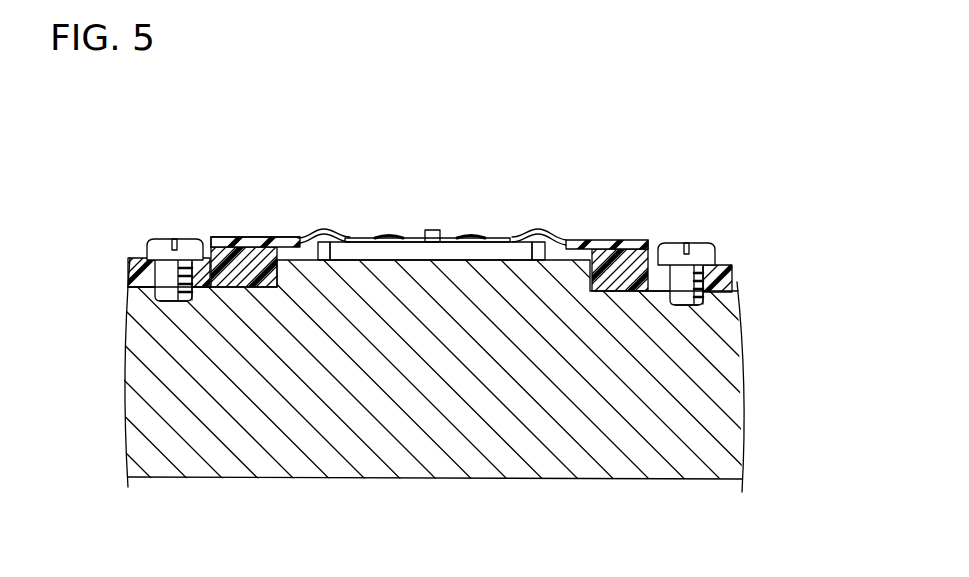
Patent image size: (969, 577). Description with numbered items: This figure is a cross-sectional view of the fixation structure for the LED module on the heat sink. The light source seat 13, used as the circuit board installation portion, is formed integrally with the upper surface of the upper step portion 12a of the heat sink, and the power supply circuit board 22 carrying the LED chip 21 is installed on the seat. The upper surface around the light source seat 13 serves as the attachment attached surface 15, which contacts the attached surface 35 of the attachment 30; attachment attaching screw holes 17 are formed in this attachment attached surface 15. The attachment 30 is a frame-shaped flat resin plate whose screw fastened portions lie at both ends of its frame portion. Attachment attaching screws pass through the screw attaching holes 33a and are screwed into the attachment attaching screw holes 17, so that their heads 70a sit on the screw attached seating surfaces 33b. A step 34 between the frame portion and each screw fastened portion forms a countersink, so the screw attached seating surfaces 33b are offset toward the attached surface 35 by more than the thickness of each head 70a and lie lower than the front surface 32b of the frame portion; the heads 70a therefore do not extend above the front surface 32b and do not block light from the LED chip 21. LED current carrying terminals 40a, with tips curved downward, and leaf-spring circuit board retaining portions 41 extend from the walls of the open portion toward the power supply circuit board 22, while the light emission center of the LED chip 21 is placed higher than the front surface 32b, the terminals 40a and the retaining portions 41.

The upper step portion 12a is at (247, 484).
The attachment attached surface 15 is at (235, 257).
The screw attached seating surface 33b is at (138, 257).
The head of attachment attaching screw 70a is at (165, 246).
The screw attaching hole 33a is at (160, 300).
The attachment attaching screw hole 17 is at (158, 297).
The attached surface 35 is at (212, 288).
The front surface of frame portion 32b is at (225, 248).
The step 34 is at (205, 235).
The attachment 30 is at (254, 232).
The LED current carrying terminal 40a is at (344, 236).
The light source seat 13 is at (370, 241).
The power supply circuit board 22 is at (494, 252).
The LED chip 21 is at (431, 230).
The circuit board retaining portion 41 is at (384, 236).